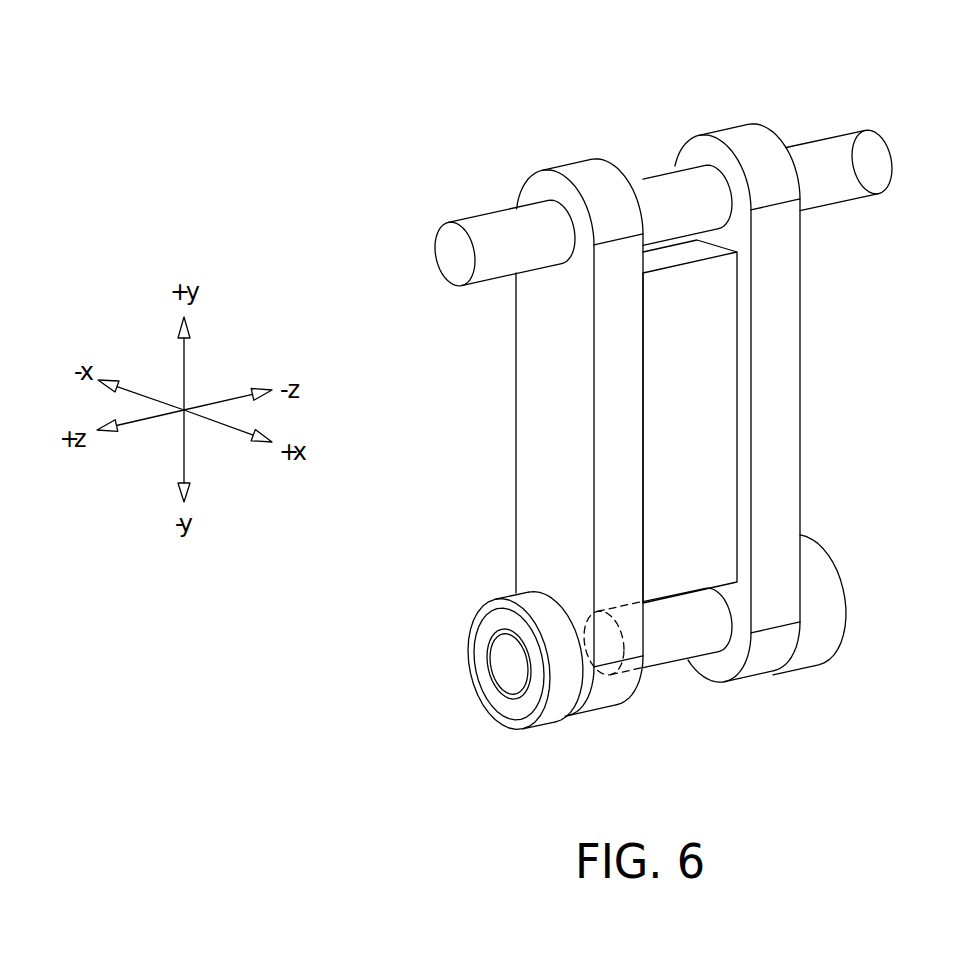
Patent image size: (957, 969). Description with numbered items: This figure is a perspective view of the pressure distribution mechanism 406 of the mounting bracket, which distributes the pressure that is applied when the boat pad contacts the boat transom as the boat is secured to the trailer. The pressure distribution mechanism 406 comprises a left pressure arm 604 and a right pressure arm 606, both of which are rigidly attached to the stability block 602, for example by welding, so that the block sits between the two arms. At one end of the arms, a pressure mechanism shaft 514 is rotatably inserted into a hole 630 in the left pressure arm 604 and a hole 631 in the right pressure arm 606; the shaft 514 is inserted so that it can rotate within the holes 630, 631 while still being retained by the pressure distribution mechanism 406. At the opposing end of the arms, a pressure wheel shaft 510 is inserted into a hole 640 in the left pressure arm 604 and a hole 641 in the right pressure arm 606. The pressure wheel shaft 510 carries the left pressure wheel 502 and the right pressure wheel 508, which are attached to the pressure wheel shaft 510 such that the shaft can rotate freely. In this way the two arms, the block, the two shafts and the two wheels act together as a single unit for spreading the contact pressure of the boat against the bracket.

The pressure distribution mechanism 406 is at (653, 133).
The left pressure wheel 502 is at (532, 603).
The right pressure wheel 508 is at (822, 572).
The pressure wheel shaft 510 is at (673, 622).
The pressure mechanism shaft 514 is at (488, 228).
The stability block 602 is at (690, 325).
The left pressure arm 604 is at (546, 372).
The right pressure arm 606 is at (777, 385).
The hole 630 is at (548, 200).
The hole 631 is at (705, 166).
The hole 640 is at (606, 677).
The hole 641 is at (717, 627).